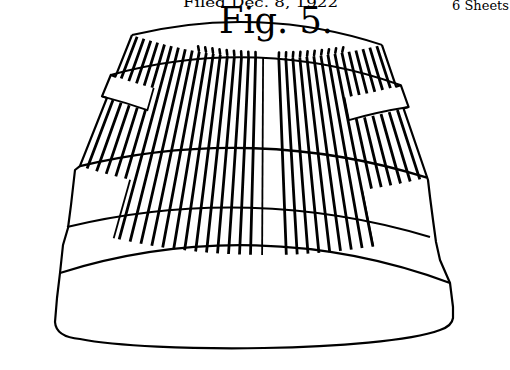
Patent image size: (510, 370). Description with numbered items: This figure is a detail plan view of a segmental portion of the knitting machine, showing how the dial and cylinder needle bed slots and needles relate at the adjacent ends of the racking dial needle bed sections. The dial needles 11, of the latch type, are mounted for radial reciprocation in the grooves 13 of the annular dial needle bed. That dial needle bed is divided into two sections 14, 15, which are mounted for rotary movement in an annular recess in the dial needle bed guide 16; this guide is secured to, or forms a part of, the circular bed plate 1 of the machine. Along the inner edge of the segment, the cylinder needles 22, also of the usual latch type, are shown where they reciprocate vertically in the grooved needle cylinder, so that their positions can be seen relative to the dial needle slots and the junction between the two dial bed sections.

The bed plate 1 is at (437, 307).
The dial needles 11 is at (358, 222).
The grooves 13 is at (408, 132).
The dial needle bed section 14 is at (72, 192).
The dial needle bed section 15 is at (418, 208).
The dial needle bed guide 16 is at (431, 263).
The cylinder needles 22 is at (344, 48).